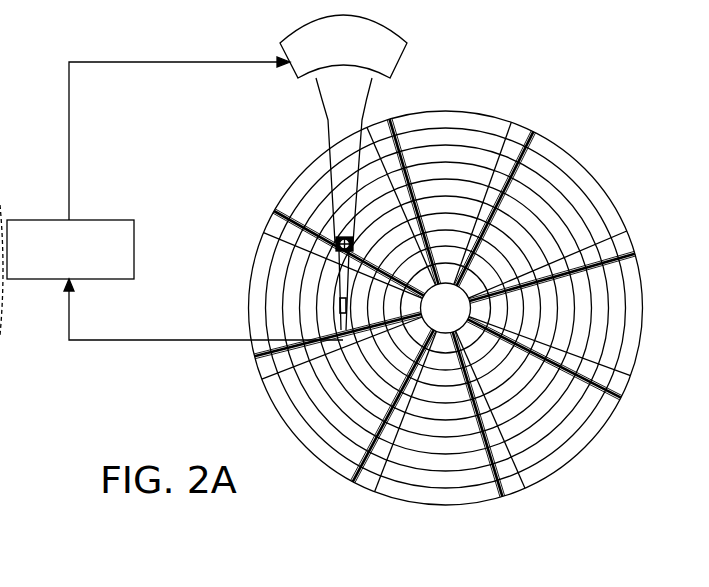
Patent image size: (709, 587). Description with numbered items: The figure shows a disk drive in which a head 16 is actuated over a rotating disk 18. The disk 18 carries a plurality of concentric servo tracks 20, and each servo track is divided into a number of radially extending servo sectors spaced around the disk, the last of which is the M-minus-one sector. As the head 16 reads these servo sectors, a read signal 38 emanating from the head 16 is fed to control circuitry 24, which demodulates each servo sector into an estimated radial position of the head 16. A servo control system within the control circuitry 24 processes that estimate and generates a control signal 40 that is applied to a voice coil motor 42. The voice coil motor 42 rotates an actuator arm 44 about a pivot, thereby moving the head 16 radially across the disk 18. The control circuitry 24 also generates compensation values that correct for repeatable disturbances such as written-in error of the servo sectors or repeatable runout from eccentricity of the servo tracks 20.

The head 16 is at (338, 314).
The disk 18 is at (586, 165).
The servo tracks 20 is at (445, 140).
The control circuitry 24 is at (108, 220).
The read signal 38 is at (156, 342).
The control signal 40 is at (69, 131).
The voice coil motor 42 is at (296, 72).
The actuator arm 44 is at (328, 140).